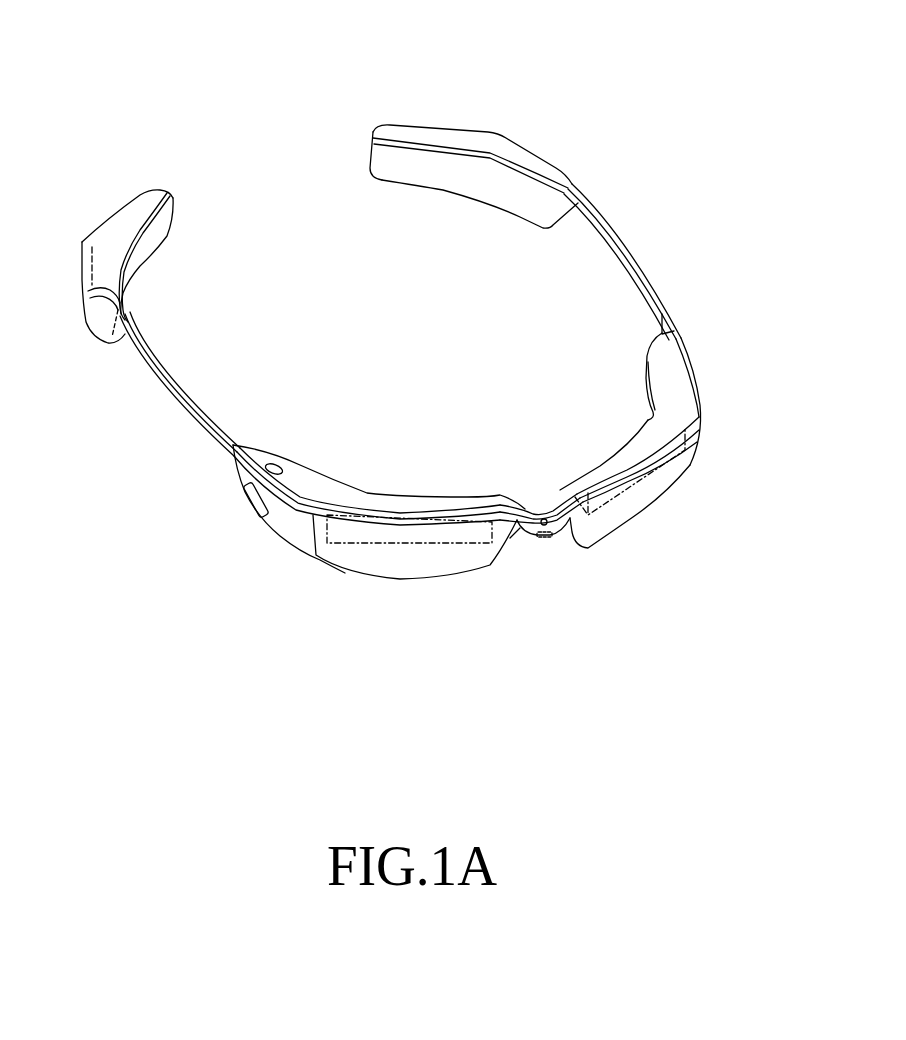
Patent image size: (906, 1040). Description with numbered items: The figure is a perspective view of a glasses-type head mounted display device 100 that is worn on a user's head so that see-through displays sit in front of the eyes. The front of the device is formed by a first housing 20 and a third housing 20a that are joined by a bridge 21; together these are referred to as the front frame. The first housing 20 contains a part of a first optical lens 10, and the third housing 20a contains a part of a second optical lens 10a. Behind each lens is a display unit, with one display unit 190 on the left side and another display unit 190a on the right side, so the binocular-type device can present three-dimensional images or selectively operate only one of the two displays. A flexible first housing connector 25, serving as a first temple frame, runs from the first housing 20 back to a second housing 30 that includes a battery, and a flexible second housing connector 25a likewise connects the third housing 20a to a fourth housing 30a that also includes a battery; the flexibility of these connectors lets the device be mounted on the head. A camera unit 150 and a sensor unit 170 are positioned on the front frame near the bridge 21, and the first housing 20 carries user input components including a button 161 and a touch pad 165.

The head mounted display device 100 is at (118, 90).
The second housing 30 is at (120, 222).
The fourth housing 30a is at (513, 153).
The first housing connector 25 is at (162, 382).
The second housing connector 25a is at (631, 253).
The first housing 20 is at (253, 446).
The third housing 20a is at (670, 363).
The bridge 21 is at (522, 502).
The button 161 is at (277, 466).
The touch pad 165 is at (243, 497).
The camera unit 150 is at (544, 518).
The sensor unit 170 is at (547, 538).
The display unit 190 is at (370, 548).
The display unit 190a is at (670, 465).
The first optical lens 10 is at (430, 572).
The second optical lens 10a is at (625, 515).